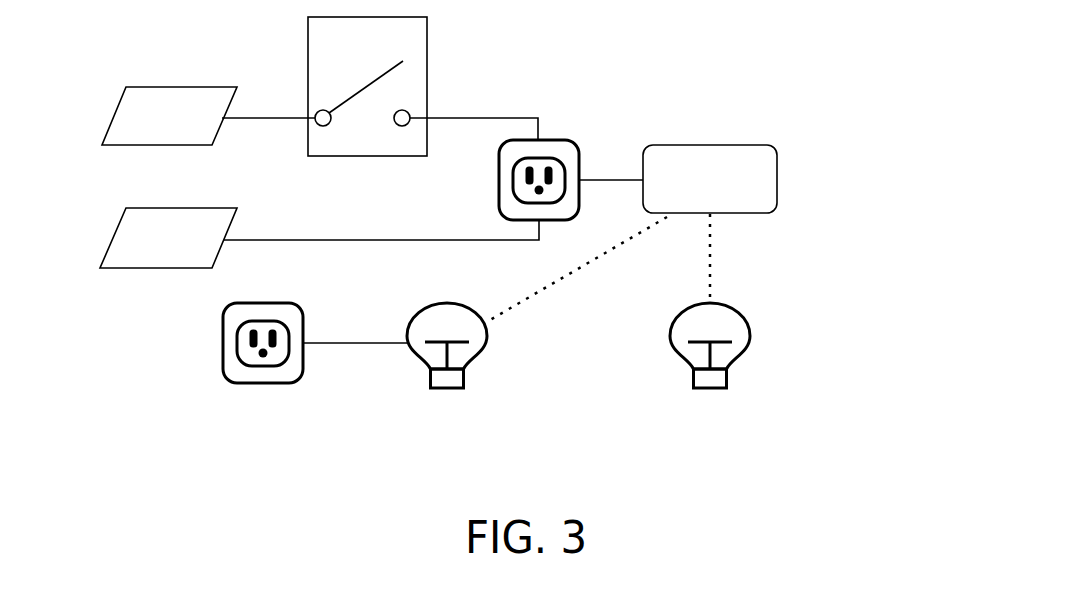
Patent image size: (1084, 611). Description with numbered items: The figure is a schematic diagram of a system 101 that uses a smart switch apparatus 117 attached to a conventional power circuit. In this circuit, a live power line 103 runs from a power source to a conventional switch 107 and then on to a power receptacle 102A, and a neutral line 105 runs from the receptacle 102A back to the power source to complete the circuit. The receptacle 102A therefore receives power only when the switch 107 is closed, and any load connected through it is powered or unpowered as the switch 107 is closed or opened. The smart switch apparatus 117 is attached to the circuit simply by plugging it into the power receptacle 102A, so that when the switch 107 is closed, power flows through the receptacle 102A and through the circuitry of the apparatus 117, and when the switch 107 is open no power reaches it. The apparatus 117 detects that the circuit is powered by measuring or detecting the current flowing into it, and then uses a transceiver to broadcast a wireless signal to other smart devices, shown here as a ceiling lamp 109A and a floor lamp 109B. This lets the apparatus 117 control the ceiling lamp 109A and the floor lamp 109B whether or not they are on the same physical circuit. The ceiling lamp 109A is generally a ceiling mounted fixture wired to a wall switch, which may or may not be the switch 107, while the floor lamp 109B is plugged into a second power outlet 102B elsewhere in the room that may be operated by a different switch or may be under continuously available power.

The system 101 is at (831, 94).
The live power line 103 is at (261, 117).
The neutral line 105 is at (253, 242).
The conventional switch 107 is at (427, 27).
The power receptacle 102A is at (583, 113).
The second power outlet 102B is at (223, 325).
The smart switch apparatus 117 is at (777, 170).
The ceiling lamp 109A is at (743, 318).
The floor lamp 109B is at (480, 348).